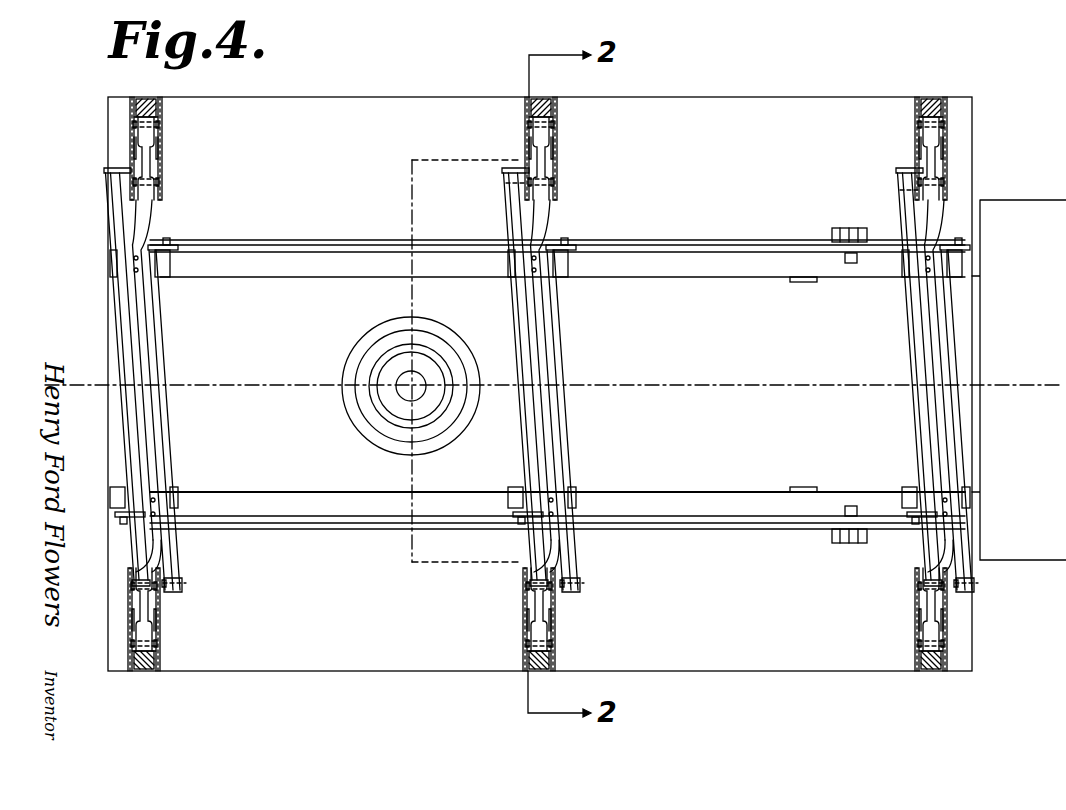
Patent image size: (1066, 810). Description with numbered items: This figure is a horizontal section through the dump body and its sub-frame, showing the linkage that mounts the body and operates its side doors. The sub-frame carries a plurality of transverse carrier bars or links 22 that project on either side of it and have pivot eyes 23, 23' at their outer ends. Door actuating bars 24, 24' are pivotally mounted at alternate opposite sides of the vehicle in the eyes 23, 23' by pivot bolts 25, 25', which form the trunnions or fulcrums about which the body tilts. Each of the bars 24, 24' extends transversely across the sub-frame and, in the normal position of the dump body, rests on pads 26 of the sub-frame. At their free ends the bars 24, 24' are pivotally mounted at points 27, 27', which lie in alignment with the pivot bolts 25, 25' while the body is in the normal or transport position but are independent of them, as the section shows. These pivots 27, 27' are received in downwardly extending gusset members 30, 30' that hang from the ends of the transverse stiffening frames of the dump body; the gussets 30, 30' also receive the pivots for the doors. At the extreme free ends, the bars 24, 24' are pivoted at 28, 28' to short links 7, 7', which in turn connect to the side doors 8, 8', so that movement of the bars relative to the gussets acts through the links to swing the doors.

The short link 7 is at (528, 647).
The short link 7' is at (527, 133).
The side door 8 is at (537, 681).
The side door 8' is at (541, 90).
The transverse carrier bar 22 is at (126, 210).
The pivot eye 23 is at (477, 170).
The pivot eye 23' is at (574, 605).
The door actuating bar 24 is at (501, 376).
The door actuating bar 24' is at (580, 392).
The pivot bolt 25 is at (687, 202).
The pivot bolt 25' is at (591, 579).
The pad 26 is at (172, 262).
The pivotal point 27 is at (508, 612).
The pivotal point 27' is at (576, 180).
The pivot 28 is at (537, 646).
The pivot 28' is at (538, 129).
The gusset member 30 is at (544, 629).
The gusset member 30' is at (541, 158).